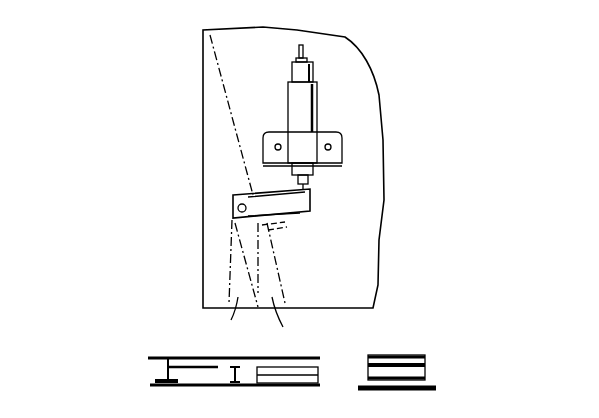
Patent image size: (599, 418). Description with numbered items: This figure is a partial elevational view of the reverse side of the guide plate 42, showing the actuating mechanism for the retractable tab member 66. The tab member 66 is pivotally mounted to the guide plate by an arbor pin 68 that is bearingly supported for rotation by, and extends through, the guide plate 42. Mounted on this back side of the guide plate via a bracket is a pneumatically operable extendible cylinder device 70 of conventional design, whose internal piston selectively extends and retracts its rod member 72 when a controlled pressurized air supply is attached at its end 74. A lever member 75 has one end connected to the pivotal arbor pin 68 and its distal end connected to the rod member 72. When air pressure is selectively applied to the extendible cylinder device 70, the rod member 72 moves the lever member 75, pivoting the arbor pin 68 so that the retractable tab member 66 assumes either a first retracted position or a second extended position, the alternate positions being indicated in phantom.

The guide plate 42 is at (199, 42).
The retractable tab member 66 is at (231, 326).
The arbor pin 68 is at (237, 208).
The extendible cylinder device 70 is at (300, 100).
The rod member 72 is at (308, 183).
The end 74 is at (305, 50).
The lever member 75 is at (278, 208).